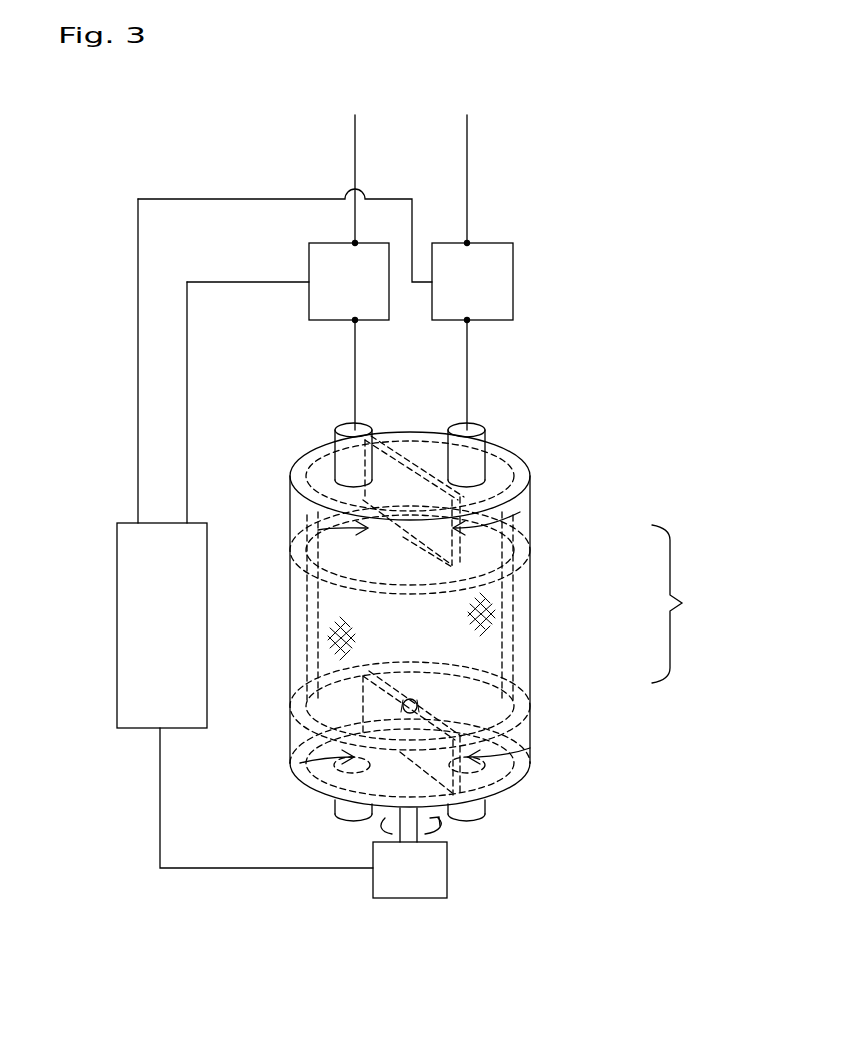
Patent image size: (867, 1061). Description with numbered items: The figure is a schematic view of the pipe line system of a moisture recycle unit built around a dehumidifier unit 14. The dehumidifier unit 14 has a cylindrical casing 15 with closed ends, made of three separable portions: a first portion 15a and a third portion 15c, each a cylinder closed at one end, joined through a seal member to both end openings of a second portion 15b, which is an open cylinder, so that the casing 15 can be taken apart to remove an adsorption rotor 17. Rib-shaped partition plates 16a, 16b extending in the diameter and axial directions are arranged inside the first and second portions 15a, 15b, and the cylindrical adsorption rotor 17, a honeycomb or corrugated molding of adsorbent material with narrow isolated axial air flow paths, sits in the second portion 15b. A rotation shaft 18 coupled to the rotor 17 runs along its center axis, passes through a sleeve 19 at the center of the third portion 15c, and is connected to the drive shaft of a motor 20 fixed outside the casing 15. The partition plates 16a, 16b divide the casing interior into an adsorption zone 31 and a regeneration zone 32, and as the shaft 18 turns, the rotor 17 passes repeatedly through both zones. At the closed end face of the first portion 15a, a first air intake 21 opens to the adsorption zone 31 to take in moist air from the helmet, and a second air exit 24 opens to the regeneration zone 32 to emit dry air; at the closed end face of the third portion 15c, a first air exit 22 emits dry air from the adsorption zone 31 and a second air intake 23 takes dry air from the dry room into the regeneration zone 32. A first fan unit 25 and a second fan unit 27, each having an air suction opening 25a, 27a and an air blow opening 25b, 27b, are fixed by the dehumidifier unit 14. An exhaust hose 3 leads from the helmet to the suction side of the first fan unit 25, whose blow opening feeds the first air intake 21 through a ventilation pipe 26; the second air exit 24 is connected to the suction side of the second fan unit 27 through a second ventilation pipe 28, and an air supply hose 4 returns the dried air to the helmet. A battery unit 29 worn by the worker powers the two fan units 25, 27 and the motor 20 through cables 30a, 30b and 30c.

The exhaust hose 3 is at (355, 140).
The air supply hose 4 is at (467, 178).
The dehumidifier unit 14 is at (640, 449).
The casing 15 is at (687, 604).
The first portion 15a is at (530, 520).
The second portion 15b is at (530, 622).
The third portion 15c is at (555, 700).
The partition plate 16a is at (403, 496).
The partition plate 16b is at (372, 712).
The adsorption rotor 17 is at (385, 552).
The rotation shaft 18 is at (405, 830).
The sleeve 19 is at (404, 706).
The motor 20 is at (408, 888).
The first air intake 21 is at (352, 448).
The first air exit 22 is at (340, 810).
The second air intake 23 is at (480, 810).
The second air exit 24 is at (470, 448).
The first fan unit 25 is at (322, 262).
The air suction opening 25a is at (355, 243).
The air blow opening 25b is at (355, 320).
The ventilation pipe 26 is at (355, 348).
The second fan unit 27 is at (505, 287).
The air suction opening 27a is at (467, 322).
The air blow opening 27b is at (467, 243).
The second ventilation pipe 28 is at (468, 356).
The battery unit 29 is at (135, 592).
The cable 30a is at (187, 335).
The cable 30b is at (137, 417).
The cable 30c is at (160, 766).
The adsorption zone 31 is at (345, 528).
The regeneration zone 32 is at (520, 508).